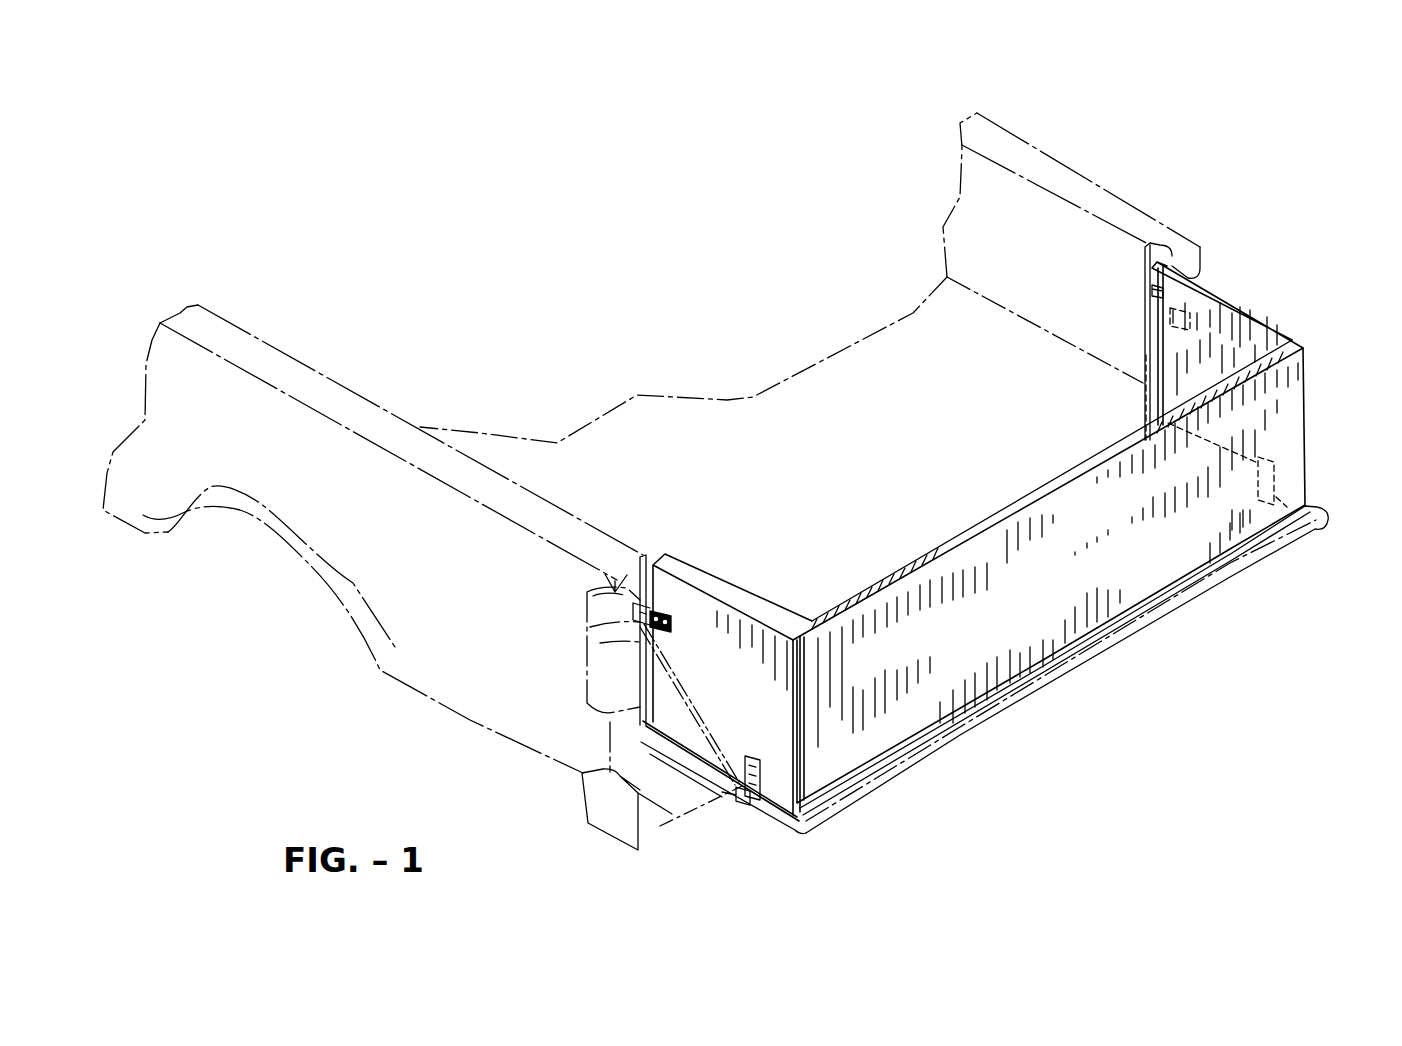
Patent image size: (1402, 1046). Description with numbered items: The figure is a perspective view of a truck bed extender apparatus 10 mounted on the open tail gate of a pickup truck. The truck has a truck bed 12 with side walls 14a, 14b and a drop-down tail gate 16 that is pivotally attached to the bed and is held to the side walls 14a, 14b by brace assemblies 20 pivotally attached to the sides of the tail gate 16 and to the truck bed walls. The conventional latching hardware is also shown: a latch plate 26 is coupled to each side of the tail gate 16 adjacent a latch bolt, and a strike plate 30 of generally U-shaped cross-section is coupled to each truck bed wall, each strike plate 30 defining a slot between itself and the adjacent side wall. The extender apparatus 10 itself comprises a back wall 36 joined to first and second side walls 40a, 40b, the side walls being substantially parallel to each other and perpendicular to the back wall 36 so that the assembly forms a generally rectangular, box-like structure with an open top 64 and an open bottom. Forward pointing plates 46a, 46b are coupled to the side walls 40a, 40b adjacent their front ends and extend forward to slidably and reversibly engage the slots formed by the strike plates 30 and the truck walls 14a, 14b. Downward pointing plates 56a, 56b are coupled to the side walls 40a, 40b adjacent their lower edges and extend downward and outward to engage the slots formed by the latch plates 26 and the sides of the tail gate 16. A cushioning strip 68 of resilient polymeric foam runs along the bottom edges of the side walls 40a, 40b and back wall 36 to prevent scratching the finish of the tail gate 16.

The truck bed extender apparatus 10 is at (1184, 744).
The truck bed 12 is at (863, 363).
The truck bed side wall 14a is at (472, 497).
The truck bed side wall 14b is at (978, 128).
The tail gate 16 is at (873, 787).
The brace assembly 20 is at (693, 703).
The latch plate 26 is at (743, 800).
The strike plate 30 is at (612, 580).
The back wall 36 is at (1150, 557).
The first side wall 40a is at (707, 583).
The second side wall 40b is at (1258, 325).
The first forward pointing plate 46a is at (640, 618).
The second forward pointing plate 46b is at (1147, 318).
The first downward pointing plate 56a is at (733, 772).
The second downward pointing plate 56b is at (1300, 533).
The open top 64 is at (928, 492).
The cushioning strip 68 is at (1092, 642).